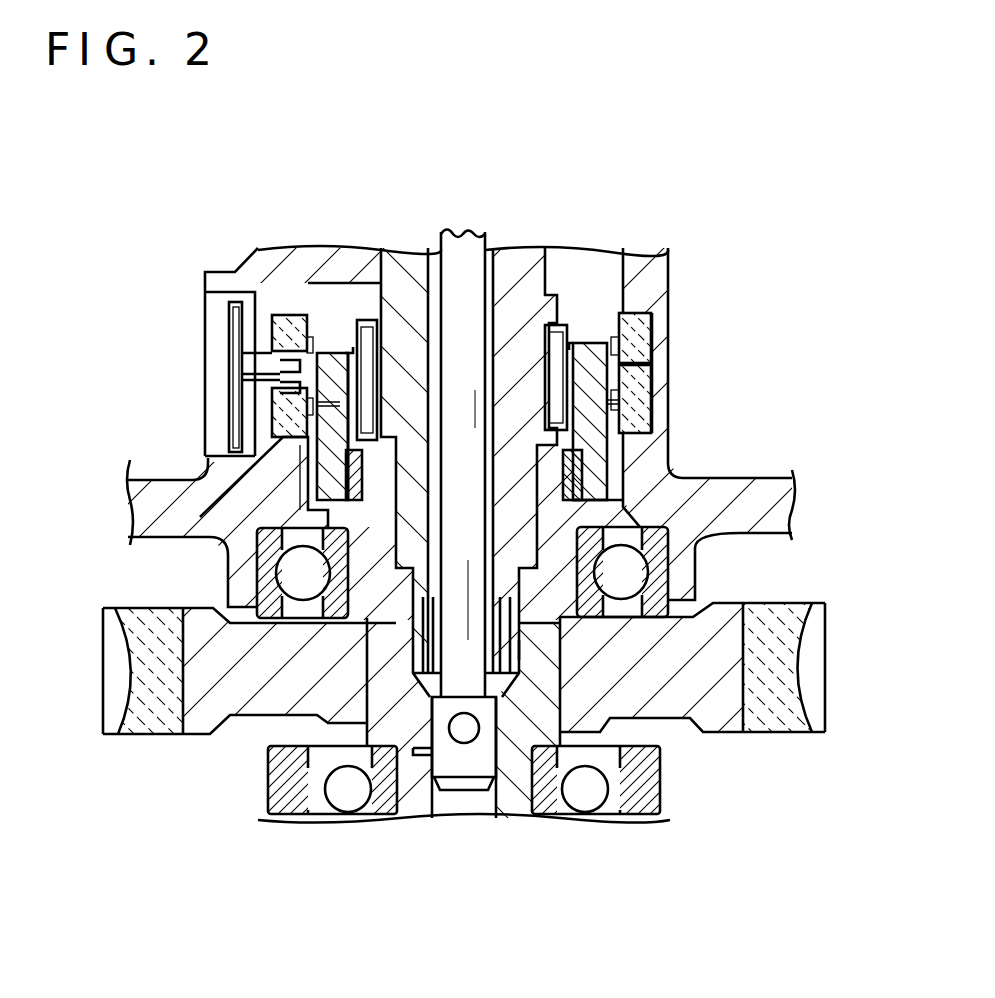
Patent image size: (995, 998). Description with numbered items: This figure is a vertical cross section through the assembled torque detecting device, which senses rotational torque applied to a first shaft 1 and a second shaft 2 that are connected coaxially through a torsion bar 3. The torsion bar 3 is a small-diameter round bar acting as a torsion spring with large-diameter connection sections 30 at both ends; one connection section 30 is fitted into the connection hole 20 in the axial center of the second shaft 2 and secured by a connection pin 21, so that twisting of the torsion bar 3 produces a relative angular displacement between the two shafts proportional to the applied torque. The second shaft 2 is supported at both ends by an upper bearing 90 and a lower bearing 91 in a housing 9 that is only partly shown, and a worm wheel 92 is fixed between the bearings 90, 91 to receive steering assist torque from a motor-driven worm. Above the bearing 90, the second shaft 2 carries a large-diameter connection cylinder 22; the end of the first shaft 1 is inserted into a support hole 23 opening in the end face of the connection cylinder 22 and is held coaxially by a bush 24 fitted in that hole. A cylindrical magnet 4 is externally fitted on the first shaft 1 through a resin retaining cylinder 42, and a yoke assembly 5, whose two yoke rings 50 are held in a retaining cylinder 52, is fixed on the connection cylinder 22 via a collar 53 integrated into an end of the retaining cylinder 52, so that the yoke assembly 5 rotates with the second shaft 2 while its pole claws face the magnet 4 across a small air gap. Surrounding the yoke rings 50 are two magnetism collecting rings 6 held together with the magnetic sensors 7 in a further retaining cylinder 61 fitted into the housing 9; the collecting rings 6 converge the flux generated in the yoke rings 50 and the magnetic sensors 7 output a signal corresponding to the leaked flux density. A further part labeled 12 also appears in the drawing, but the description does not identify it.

The first shaft 1 is at (515, 262).
The second shaft 2 is at (517, 805).
The torsion bar 3 is at (450, 233).
The cylindrical magnet 4 is at (360, 318).
The yoke assembly 5 is at (599, 347).
The magnetism collecting ring 6 is at (272, 328).
The magnetic sensor 7 is at (242, 367).
The housing 9 is at (667, 290).
The housing 12 is at (612, 493).
The connection hole 20 is at (487, 810).
The connection pin 21 is at (457, 745).
The connection cylinder 22 is at (213, 557).
The support hole 23 is at (520, 646).
The bush 24 is at (400, 642).
The connection section 30 is at (435, 753).
The retaining cylinder 42 is at (382, 310).
The yoke ring 50 is at (618, 362).
The retaining cylinder 52 is at (610, 467).
The collar 53 is at (588, 507).
The retaining cylinder 61 is at (287, 302).
The bearing 90 is at (645, 557).
The bearing 91 is at (572, 813).
The worm wheel 92 is at (207, 735).